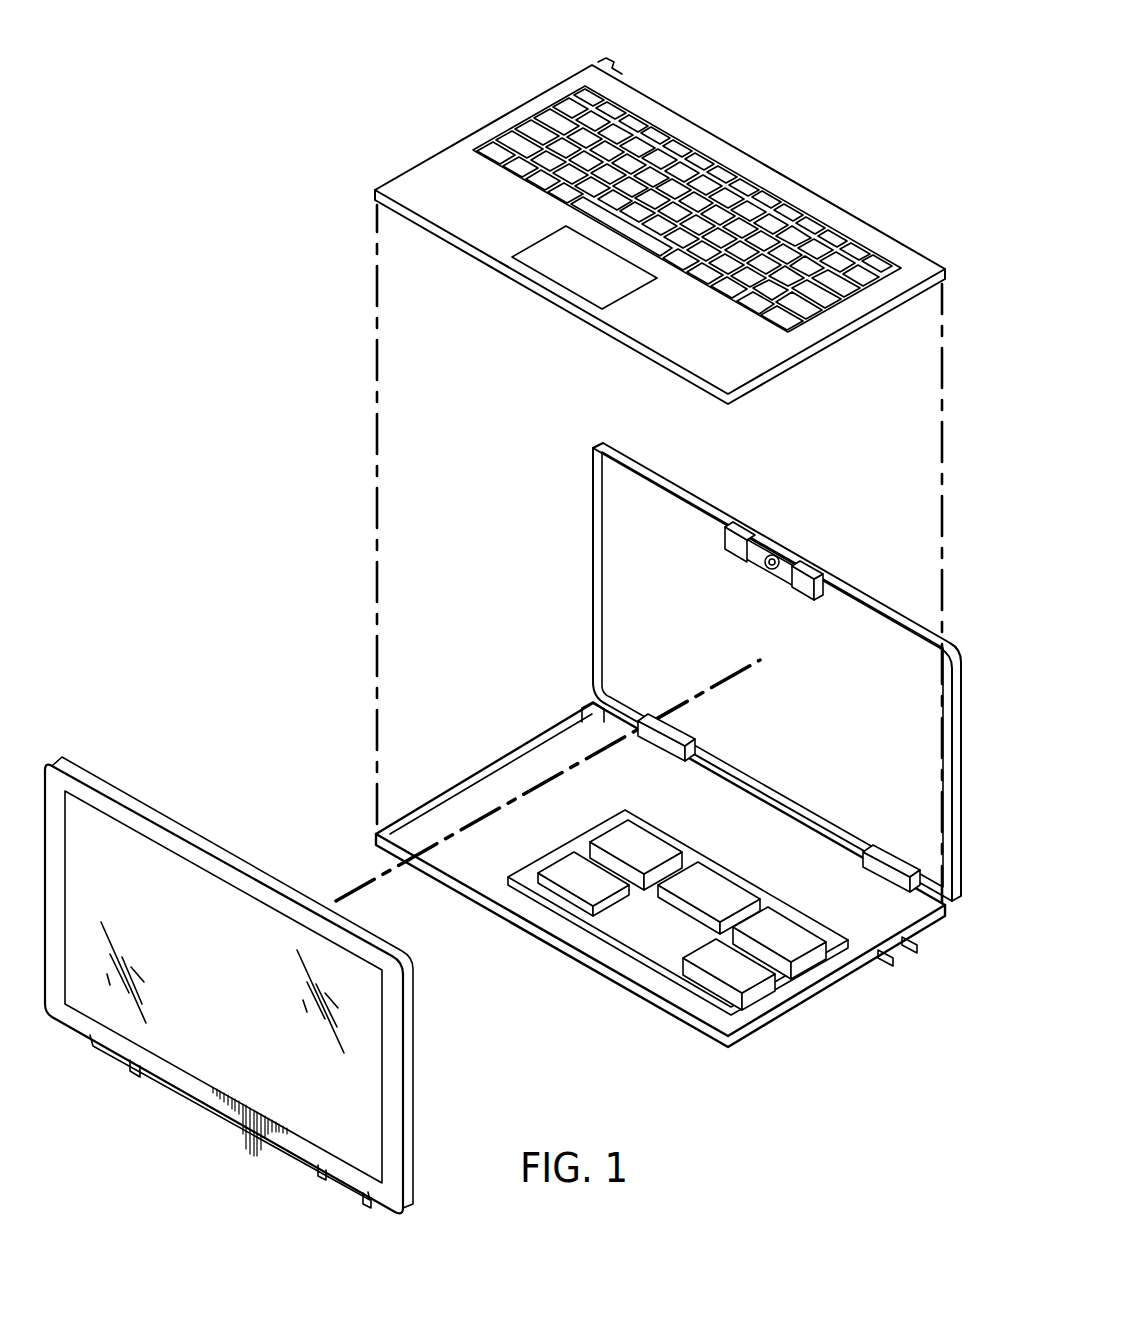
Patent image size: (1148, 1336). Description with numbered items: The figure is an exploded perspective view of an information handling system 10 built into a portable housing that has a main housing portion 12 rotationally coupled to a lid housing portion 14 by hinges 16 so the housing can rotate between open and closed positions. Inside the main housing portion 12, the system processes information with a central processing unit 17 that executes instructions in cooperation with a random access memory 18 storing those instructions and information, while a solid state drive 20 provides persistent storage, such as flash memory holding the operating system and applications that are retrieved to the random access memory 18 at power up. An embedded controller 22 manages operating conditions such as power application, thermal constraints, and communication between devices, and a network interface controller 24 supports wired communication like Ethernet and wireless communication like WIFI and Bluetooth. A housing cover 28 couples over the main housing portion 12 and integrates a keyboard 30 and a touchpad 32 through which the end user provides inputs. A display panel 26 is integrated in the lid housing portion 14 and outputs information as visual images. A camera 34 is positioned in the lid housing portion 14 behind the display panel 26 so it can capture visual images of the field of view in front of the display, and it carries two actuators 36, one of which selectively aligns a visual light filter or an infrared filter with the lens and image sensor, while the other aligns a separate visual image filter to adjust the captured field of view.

The information handling system 10 is at (190, 298).
The main housing portion 12 is at (604, 981).
The lid housing portion 14 is at (580, 570).
The hinges 16 is at (893, 856).
The central processing unit (CPU) 17 is at (607, 840).
The random access memory (RAM) 18 is at (553, 868).
The solid state drive (SSD) 20 is at (692, 870).
The embedded controller 22 is at (802, 938).
The network interface controller 24 is at (760, 968).
The display panel 26 is at (217, 1060).
The housing cover 28 is at (428, 153).
The keyboard 30 is at (730, 160).
The touchpad 32 is at (577, 278).
The camera 34 is at (767, 560).
The actuator 36 is at (847, 542).